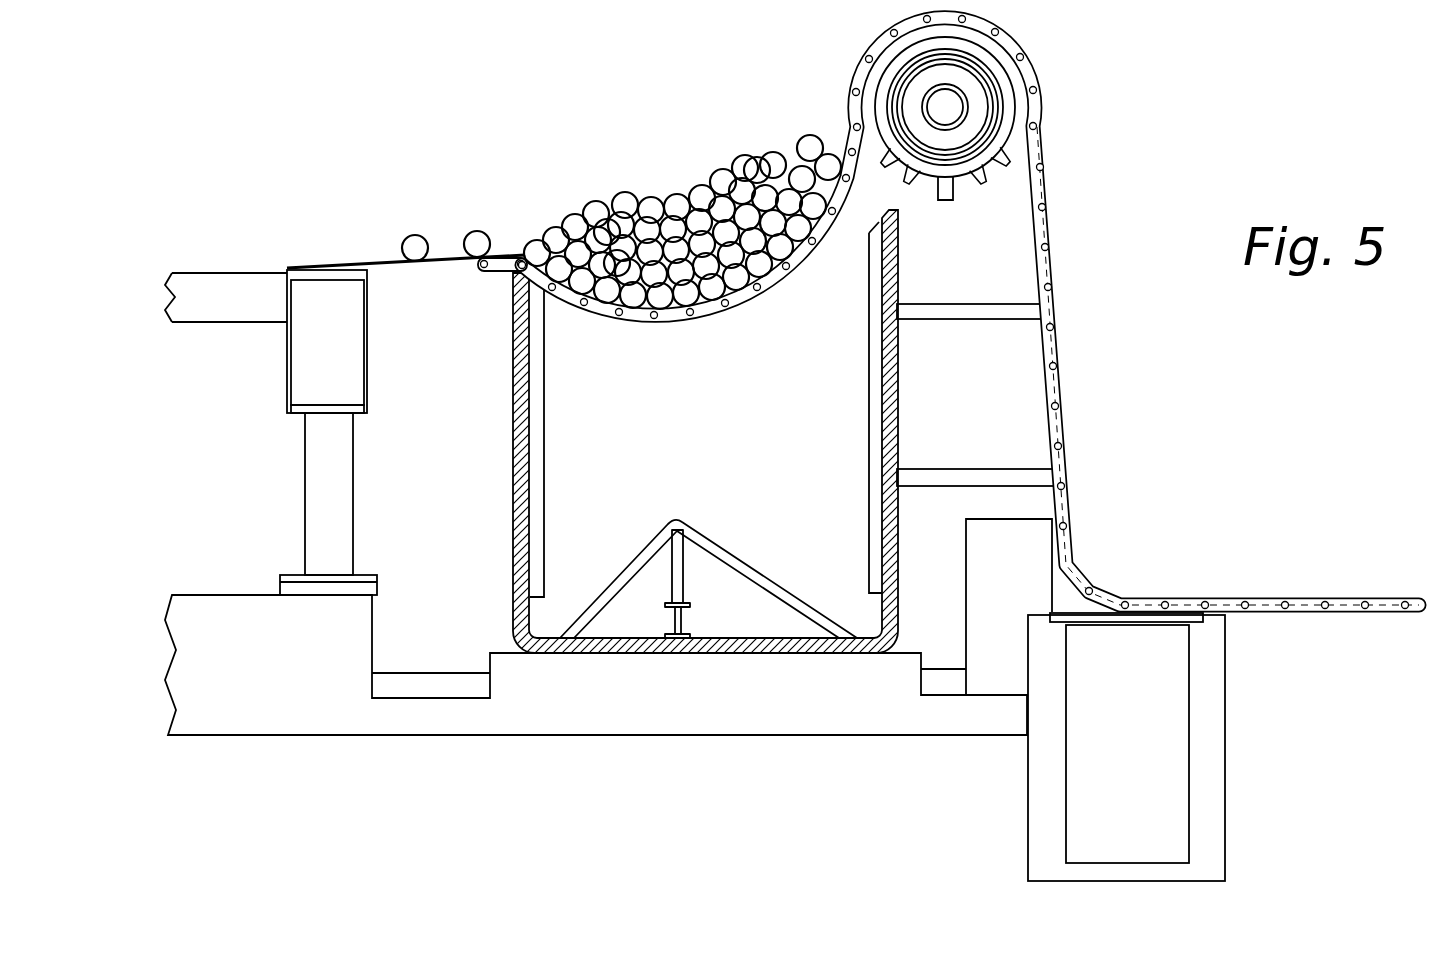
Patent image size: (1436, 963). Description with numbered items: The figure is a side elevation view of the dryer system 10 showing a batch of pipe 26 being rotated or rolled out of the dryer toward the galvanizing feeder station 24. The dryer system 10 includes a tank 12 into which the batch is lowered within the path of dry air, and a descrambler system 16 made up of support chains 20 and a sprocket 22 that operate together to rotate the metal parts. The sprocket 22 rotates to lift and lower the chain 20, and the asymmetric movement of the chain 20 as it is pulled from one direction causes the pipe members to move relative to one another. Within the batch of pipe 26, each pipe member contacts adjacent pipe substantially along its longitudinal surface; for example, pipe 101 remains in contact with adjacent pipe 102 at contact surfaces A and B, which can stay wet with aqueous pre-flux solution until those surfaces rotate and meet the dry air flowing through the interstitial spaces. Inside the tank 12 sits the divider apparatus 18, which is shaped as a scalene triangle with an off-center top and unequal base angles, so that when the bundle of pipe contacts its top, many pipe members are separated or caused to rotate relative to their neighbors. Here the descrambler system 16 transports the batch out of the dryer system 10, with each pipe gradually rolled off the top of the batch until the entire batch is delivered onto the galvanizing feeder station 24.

The dryer system 10 is at (948, 312).
The tank 12 is at (520, 540).
The descrambler system 16 is at (836, 50).
The divider apparatus 18 is at (775, 590).
The support chains 20 is at (775, 291).
The sprocket 22 is at (960, 178).
The galvanizing feeder station 24 is at (350, 243).
The batch of pipe 26 is at (655, 135).
The pipe 101 is at (617, 265).
The pipe 102 is at (772, 222).
The contact surface A is at (607, 230).
The contact surface B is at (753, 177).